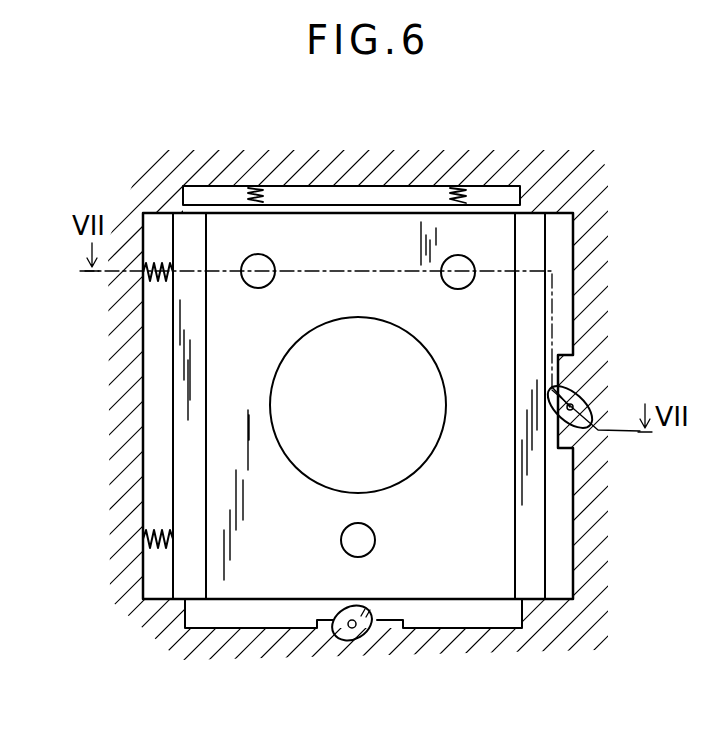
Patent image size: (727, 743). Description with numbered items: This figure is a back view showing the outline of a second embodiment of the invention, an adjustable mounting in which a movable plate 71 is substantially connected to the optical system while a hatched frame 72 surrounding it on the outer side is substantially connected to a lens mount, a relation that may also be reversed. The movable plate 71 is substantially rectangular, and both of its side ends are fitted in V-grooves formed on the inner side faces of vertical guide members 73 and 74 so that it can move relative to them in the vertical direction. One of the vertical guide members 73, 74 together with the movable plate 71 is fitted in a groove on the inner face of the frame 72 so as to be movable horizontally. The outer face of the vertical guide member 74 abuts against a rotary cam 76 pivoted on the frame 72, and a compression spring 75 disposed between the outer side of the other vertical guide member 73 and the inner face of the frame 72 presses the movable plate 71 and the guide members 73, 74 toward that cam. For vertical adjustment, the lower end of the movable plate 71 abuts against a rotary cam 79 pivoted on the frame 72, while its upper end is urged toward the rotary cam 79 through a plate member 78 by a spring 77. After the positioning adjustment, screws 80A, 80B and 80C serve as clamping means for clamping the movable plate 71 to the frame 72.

The movable plate 71 is at (500, 247).
The frame 72 is at (585, 285).
The vertical guide member 73 is at (185, 480).
The vertical guide member 74 is at (545, 537).
The compression spring 75 is at (140, 293).
The rotary cam 76 is at (580, 392).
The spring 77 is at (468, 190).
The plate member 78 is at (223, 202).
The rotary cam 79 is at (373, 630).
The screw 80A is at (277, 272).
The screw 80B is at (459, 290).
The screw 80C is at (376, 540).